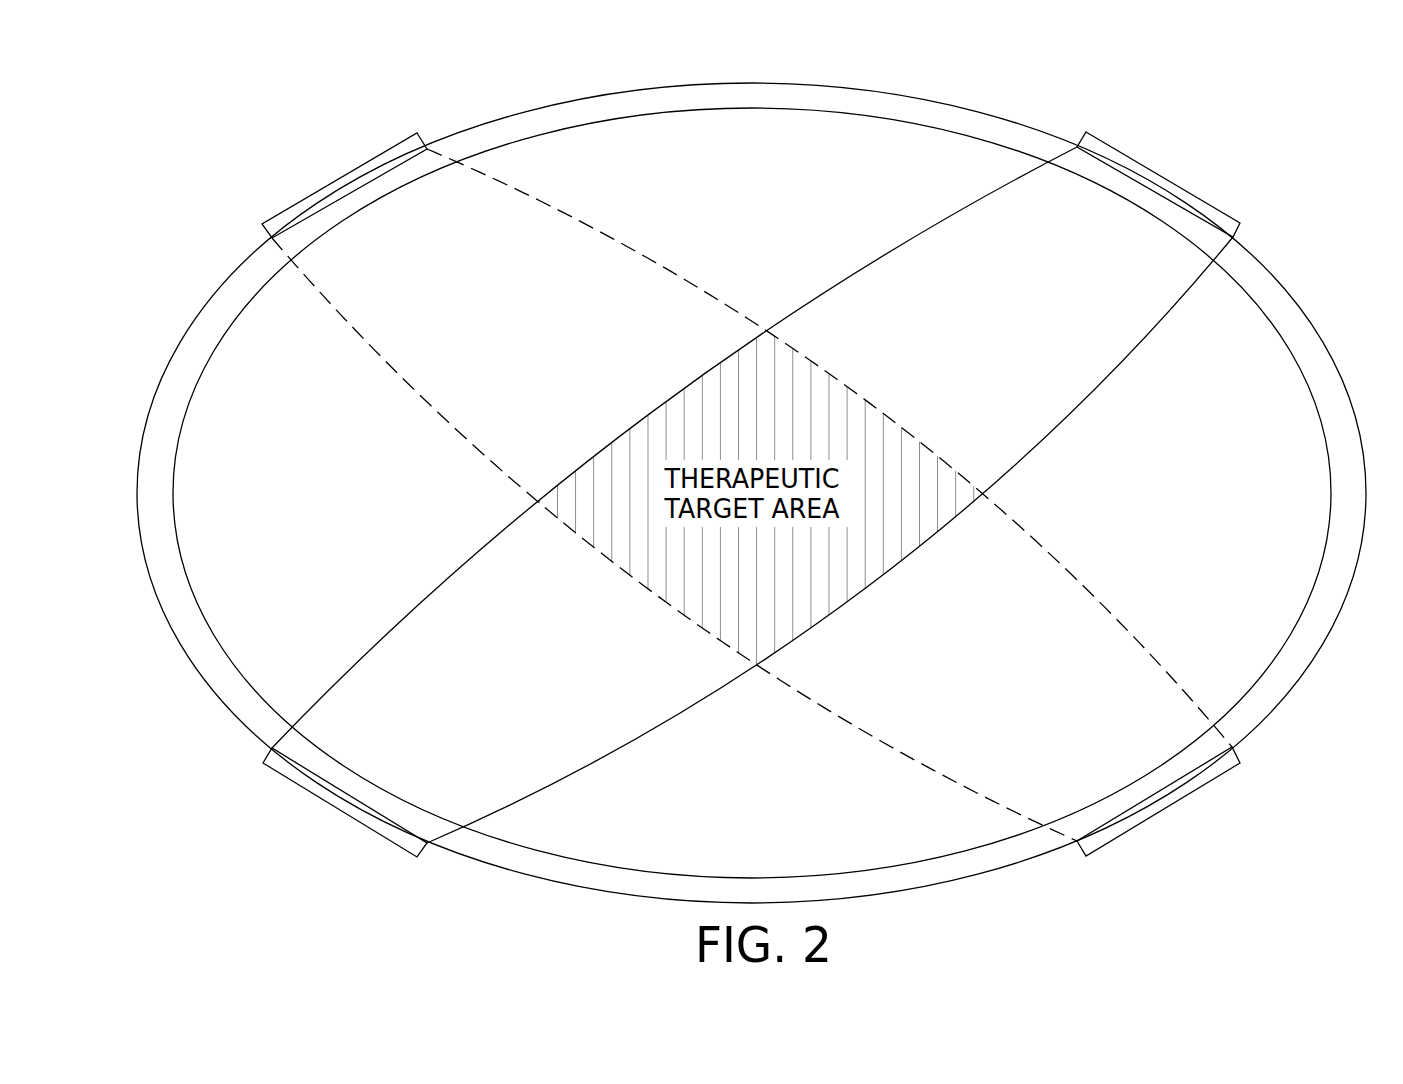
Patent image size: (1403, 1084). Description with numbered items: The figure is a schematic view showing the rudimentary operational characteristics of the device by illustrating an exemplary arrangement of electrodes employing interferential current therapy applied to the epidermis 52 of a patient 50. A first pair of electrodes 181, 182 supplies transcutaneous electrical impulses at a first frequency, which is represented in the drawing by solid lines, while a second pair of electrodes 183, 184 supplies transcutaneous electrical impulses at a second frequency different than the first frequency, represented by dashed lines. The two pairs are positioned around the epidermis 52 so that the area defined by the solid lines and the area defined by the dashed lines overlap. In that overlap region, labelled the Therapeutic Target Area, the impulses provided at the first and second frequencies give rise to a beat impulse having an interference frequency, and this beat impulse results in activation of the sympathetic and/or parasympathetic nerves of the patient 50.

The epidermis 52 is at (936, 112).
The patient 50 is at (771, 197).
The first pair electrode 181 is at (1163, 177).
The first pair electrode 182 is at (338, 814).
The second pair electrode 183 is at (341, 176).
The second pair electrode 184 is at (1163, 810).